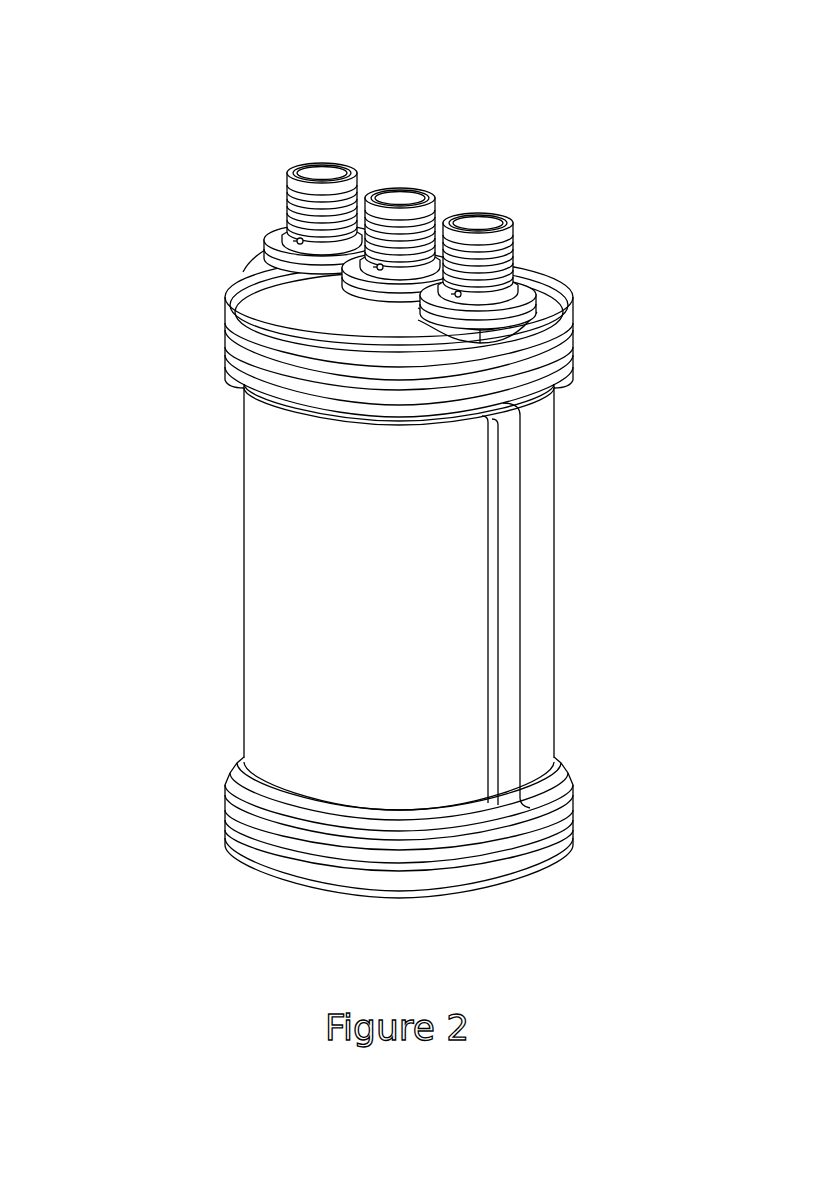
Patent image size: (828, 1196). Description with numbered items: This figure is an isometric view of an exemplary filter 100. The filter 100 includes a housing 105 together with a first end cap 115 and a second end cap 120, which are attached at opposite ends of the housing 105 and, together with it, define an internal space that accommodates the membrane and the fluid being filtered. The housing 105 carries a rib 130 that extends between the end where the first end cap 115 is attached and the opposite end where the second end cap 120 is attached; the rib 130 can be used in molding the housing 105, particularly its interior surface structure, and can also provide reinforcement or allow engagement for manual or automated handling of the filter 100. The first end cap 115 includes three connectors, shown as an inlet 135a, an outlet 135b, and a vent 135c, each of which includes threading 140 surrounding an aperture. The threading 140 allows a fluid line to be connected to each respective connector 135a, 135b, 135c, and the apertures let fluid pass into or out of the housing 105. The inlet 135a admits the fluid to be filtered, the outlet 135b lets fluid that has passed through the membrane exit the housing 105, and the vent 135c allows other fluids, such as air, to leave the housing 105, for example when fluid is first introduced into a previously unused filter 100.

The filter 100 is at (167, 53).
The housing 105 is at (243, 578).
The first end cap 115 is at (538, 268).
The second end cap 120 is at (545, 878).
The rib 130 is at (515, 563).
The inlet 135a is at (320, 170).
The outlet 135b is at (404, 197).
The vent 135c is at (482, 225).
The threading 140 is at (287, 192).